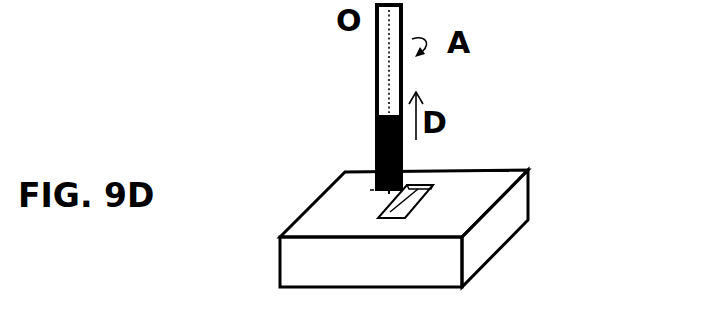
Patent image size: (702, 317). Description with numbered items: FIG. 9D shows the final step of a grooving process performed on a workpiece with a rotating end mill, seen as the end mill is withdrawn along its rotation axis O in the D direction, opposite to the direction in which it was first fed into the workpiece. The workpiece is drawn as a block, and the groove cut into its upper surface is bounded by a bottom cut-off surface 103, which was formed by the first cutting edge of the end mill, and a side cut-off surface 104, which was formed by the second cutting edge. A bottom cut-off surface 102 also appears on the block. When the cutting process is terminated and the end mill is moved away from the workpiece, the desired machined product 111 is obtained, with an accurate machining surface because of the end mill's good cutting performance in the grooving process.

The bottom cut-off surface 102 is at (488, 225).
The bottom cut-off surface 103 is at (412, 205).
The side cut-off surface 104 is at (432, 186).
The machined product 111 is at (342, 204).